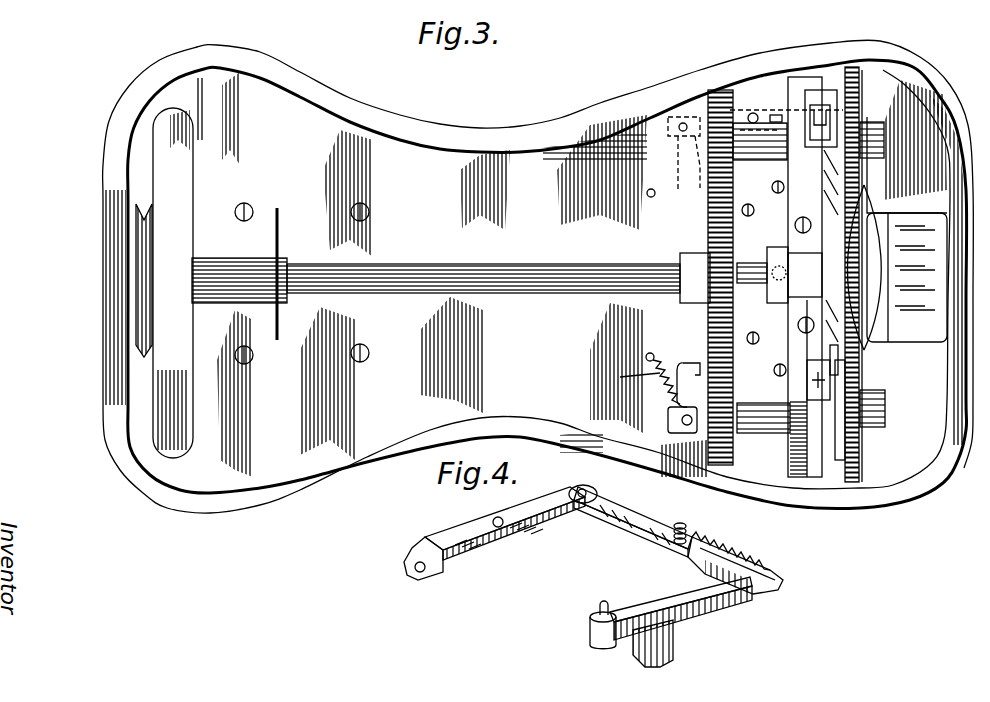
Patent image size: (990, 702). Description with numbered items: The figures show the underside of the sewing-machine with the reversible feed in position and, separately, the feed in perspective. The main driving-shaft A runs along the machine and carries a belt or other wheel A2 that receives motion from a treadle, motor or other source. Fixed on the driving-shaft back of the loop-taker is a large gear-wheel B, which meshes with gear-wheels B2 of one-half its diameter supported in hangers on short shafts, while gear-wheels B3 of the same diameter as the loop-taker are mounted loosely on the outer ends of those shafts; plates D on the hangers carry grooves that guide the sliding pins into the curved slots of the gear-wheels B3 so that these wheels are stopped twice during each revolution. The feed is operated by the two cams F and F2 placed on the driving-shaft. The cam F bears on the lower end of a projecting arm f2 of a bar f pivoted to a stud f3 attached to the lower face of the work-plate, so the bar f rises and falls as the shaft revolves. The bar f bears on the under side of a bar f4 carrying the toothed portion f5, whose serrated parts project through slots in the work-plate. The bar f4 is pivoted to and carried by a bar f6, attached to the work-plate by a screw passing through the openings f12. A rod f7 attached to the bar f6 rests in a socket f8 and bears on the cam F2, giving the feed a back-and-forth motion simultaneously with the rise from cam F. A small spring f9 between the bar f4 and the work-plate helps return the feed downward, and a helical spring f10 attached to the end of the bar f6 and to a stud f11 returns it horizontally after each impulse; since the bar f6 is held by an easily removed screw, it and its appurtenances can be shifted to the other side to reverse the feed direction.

In FIG. 3, the main driving-shaft A is at (420, 262).
In FIG. 3, the belt or other wheel A2 is at (178, 188).
In FIG. 3, the large gear-wheel B is at (710, 317).
In FIG. 3, the gear-wheels B2 is at (707, 182).
In FIG. 3, the gear-wheels B3 is at (858, 112).
In FIG. 3, the plates D is at (810, 83).
In FIG. 3, the cam F is at (778, 250).
In FIG. 3, the cam F2 is at (760, 258).
In FIG. 4, the bar f is at (646, 606).
In FIG. 3, the projecting arm f2 is at (805, 275).
In FIG. 4, the projecting arm f2 is at (670, 645).
In FIG. 4, the stud f3 is at (600, 613).
In FIG. 3, the bar f4 is at (863, 377).
In FIG. 4, the bar f4 is at (647, 518).
In FIG. 4, the toothed portion f5 is at (727, 547).
In FIG. 3, the bar f6 is at (750, 437).
In FIG. 4, the bar f6 is at (488, 535).
In FIG. 3, the rod f7 is at (687, 366).
In FIG. 3, the socket f8 is at (737, 200).
In FIG. 4, the small spring f9 is at (687, 534).
In FIG. 3, the helical spring f10 is at (626, 377).
In FIG. 3, the stud f11 is at (649, 355).
In FIG. 4, the openings f12 is at (507, 526).